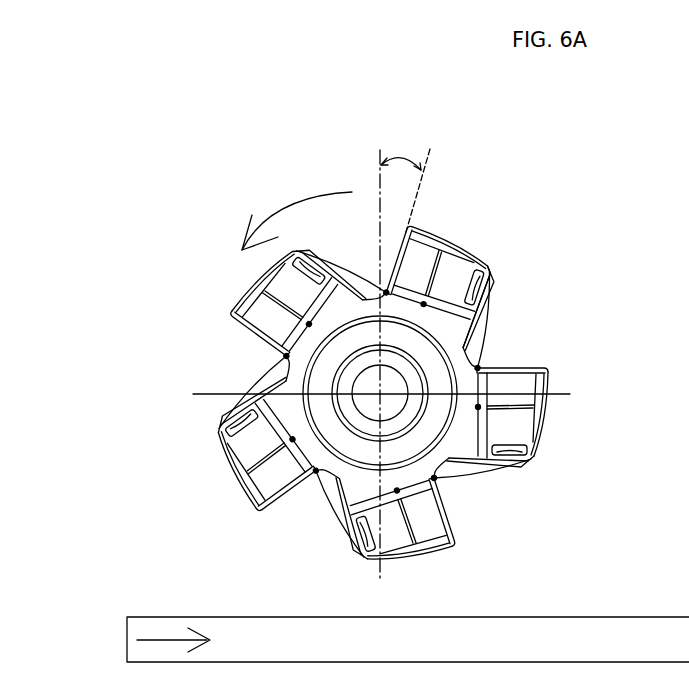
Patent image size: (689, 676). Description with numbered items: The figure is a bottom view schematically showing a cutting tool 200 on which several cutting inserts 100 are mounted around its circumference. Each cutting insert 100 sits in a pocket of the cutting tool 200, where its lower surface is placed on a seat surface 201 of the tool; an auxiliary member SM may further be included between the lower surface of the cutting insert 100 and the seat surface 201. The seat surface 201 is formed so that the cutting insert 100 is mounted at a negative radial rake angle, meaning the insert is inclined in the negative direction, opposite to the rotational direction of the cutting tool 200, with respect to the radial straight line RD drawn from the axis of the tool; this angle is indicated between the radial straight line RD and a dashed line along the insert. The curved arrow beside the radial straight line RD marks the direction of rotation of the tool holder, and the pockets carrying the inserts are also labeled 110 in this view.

The cutting insert 100 is at (437, 228).
The insert seat / pocket 110 is at (541, 366).
The cutting tool 200 is at (497, 288).
The seat surface 201 is at (441, 243).
The auxiliary member SM is at (480, 273).
The radial straight line RD is at (379, 178).